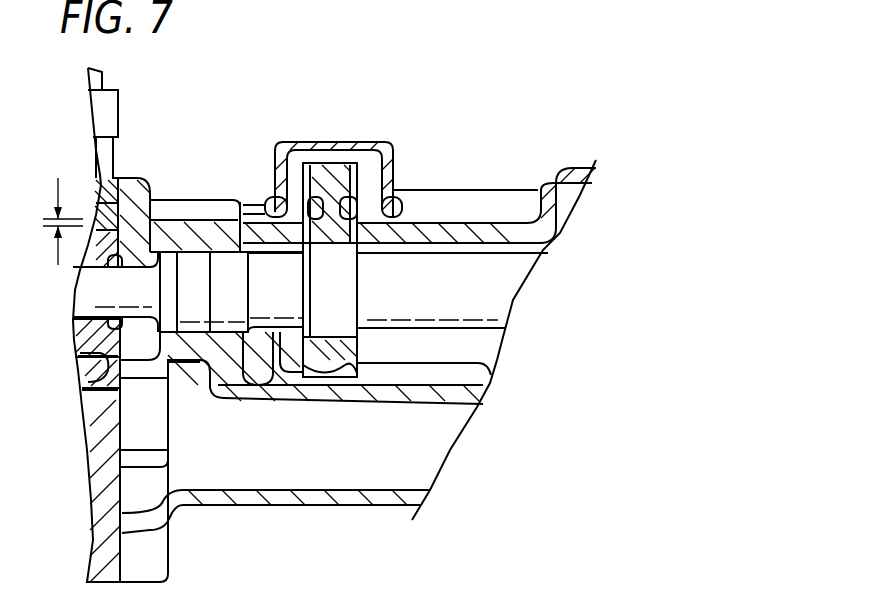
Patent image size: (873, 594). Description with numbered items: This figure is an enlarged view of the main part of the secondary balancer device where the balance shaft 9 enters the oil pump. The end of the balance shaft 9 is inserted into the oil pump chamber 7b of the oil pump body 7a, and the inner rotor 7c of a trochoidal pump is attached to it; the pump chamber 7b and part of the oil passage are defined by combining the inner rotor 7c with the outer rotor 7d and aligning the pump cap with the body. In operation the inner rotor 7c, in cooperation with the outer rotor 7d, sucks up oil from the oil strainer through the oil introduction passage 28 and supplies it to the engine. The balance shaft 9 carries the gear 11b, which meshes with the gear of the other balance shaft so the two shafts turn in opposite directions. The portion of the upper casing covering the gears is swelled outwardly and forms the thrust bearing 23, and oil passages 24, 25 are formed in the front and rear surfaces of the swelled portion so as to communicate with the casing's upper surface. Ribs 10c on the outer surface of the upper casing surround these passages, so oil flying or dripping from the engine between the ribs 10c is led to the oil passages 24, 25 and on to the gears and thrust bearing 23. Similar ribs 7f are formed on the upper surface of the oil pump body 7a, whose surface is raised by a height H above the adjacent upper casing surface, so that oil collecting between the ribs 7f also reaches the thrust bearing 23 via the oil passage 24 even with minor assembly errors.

The oil pump body 7a is at (180, 522).
The oil pump chamber 7b is at (93, 400).
The inner rotor 7c is at (72, 330).
The outer rotor 7d is at (80, 368).
The ribs 7f is at (183, 202).
The balance shaft 9 is at (467, 262).
The ribs 10c is at (240, 200).
The gear 11b is at (333, 185).
The thrust bearing 23 is at (318, 235).
The oil passage 24 is at (250, 208).
The oil passage 25 is at (408, 220).
The oil introduction passage 28 is at (356, 492).
The height H is at (63, 206).